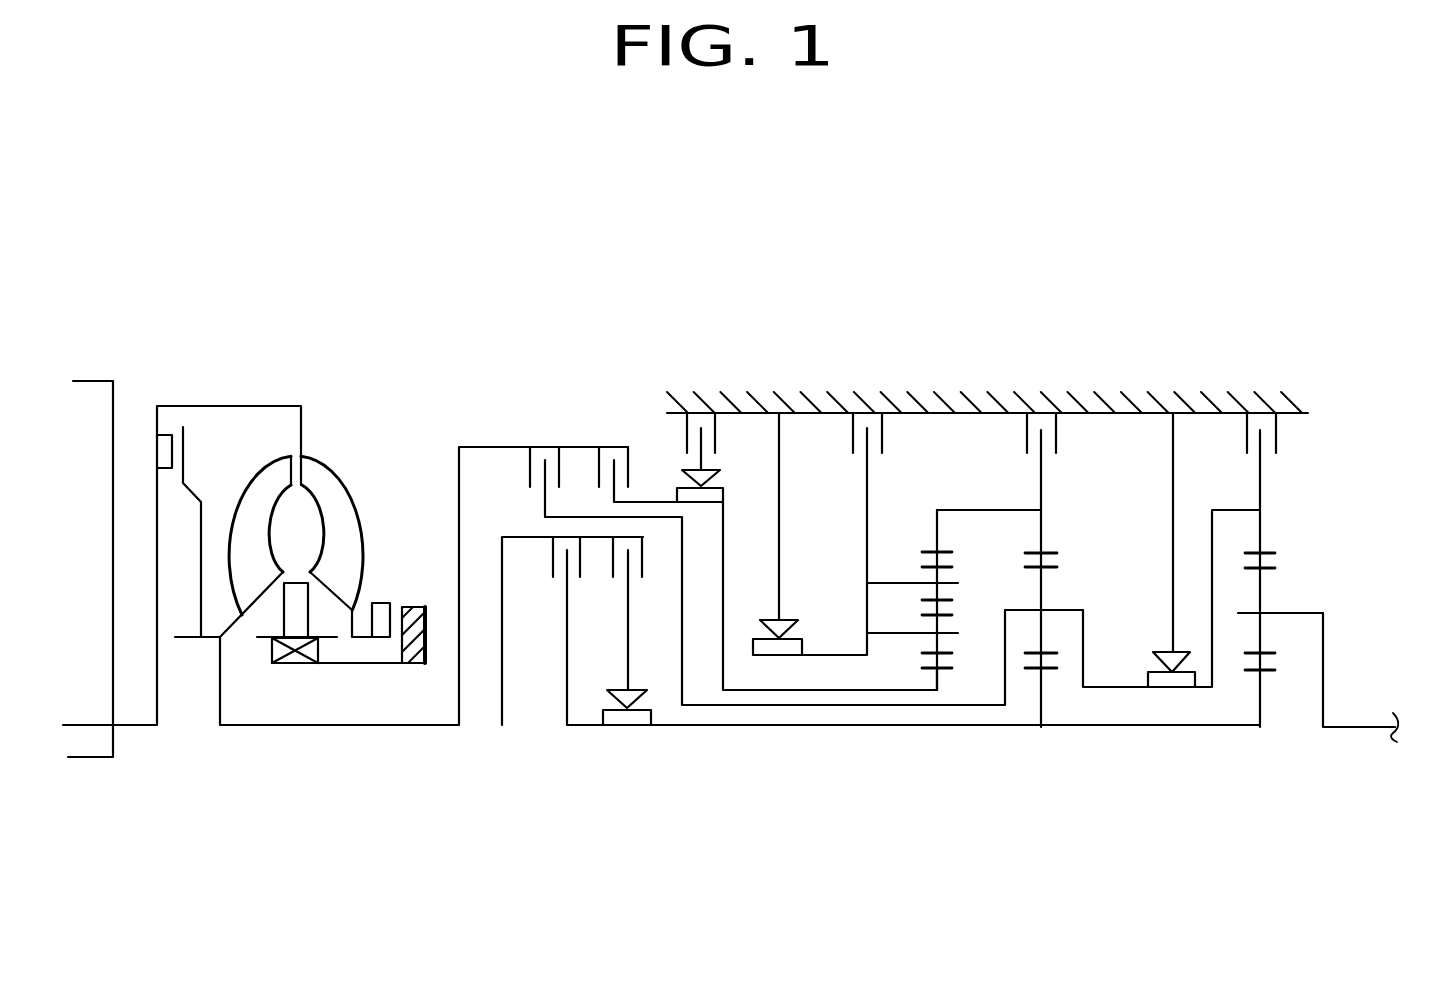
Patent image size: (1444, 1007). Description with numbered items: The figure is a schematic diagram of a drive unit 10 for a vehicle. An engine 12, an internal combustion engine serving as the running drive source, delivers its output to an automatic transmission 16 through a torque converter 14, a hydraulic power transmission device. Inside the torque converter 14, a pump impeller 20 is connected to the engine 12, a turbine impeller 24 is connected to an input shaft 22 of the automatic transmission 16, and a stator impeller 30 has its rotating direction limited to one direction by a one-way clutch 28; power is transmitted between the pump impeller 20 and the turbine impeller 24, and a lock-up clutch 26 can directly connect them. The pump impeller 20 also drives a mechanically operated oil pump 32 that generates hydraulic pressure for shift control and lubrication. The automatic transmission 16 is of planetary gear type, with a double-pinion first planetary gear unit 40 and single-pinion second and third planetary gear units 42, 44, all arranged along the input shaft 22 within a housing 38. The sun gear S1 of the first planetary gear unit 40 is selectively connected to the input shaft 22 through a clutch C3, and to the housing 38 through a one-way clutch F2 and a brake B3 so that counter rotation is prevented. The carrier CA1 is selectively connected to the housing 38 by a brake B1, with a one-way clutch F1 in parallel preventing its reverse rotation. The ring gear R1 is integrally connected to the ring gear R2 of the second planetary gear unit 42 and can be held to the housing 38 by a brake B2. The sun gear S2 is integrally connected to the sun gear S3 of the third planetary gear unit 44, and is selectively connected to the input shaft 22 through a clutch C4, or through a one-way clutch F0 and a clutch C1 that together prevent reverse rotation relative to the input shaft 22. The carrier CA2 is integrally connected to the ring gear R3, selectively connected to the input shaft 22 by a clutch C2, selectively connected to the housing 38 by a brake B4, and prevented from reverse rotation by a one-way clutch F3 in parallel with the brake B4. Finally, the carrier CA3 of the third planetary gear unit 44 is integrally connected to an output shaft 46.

The drive unit 10 is at (1230, 215).
The engine 12 is at (88, 393).
The torque converter 14 is at (304, 380).
The automatic transmission 16 is at (1150, 340).
The pump impeller 20 is at (326, 482).
The input shaft 22 is at (337, 728).
The turbine impeller 24 is at (263, 493).
The lock-up clutch 26 is at (158, 455).
The one-way clutch 28 is at (295, 652).
The stator impeller 30 is at (300, 603).
The oil pump 32 is at (380, 610).
The housing 38 is at (410, 610).
The first planetary gear unit 40 is at (933, 697).
The second planetary gear unit 42 is at (1037, 737).
The third planetary gear unit 44 is at (1247, 743).
The output shaft 46 is at (1353, 728).
The clutch C1 is at (641, 613).
The clutch C2 is at (891, 558).
The clutch C3 is at (636, 456).
The clutch C4 is at (881, 631).
The brake B1 is at (865, 402).
The brake B2 is at (1037, 402).
The brake B3 is at (702, 402).
The brake B4 is at (1259, 402).
The one-way clutch F0 is at (627, 731).
The one-way clutch F1 is at (767, 616).
The one-way clutch F2 is at (807, 559).
The one-way clutch F3 is at (1163, 651).
The sun gear S1 is at (940, 670).
The sun gear S2 is at (1047, 670).
The sun gear S3 is at (1267, 672).
The ring gear R1 is at (927, 552).
The ring gear R2 is at (1048, 551).
The ring gear R3 is at (1265, 552).
The carrier CA1 is at (868, 534).
The carrier CA2 is at (1058, 609).
The carrier CA3 is at (1283, 612).